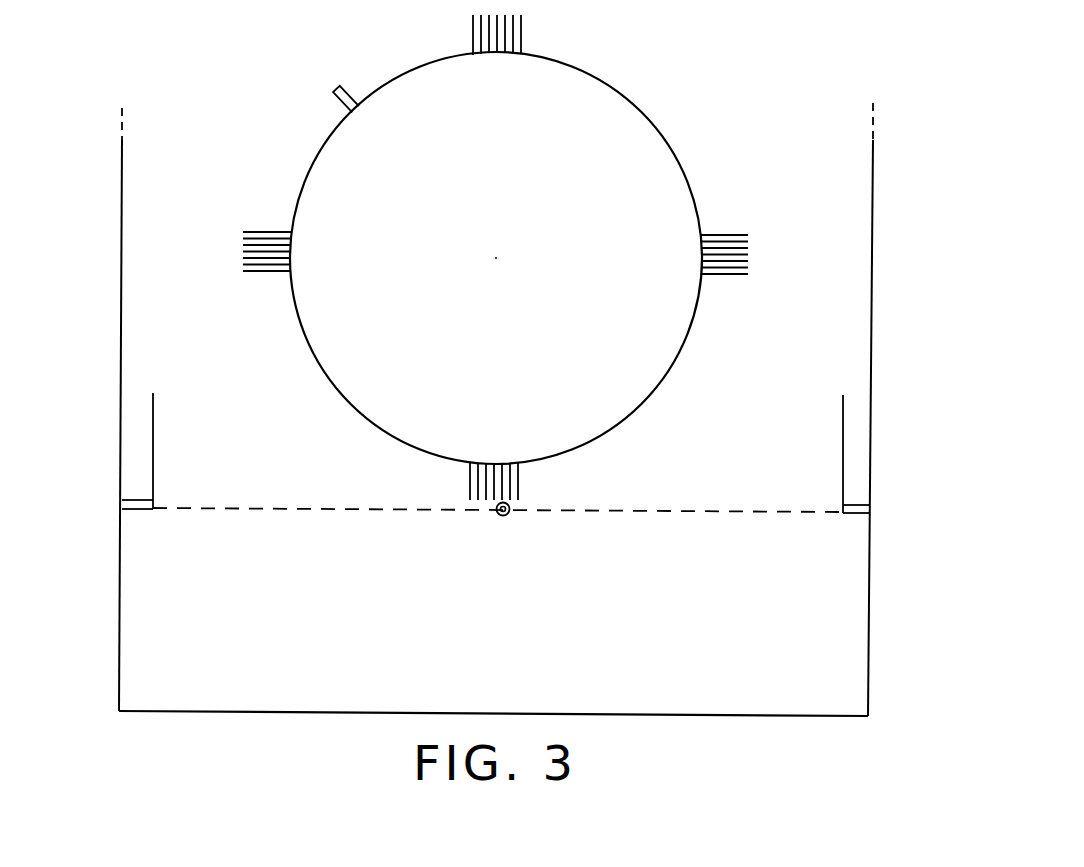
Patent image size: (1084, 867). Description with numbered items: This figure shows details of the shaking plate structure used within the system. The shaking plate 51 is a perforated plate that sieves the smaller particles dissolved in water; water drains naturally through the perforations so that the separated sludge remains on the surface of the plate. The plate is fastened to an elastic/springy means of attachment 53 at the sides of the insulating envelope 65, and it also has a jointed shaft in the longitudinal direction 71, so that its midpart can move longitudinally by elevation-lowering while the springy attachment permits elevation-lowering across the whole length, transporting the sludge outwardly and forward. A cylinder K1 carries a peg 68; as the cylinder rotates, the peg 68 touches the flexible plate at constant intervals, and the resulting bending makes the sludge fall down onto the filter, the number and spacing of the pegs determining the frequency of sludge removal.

The circular key/cam body K1 is at (652, 172).
The peg 68 is at (336, 86).
The insulating envelope 65 is at (122, 227).
The elastic/springy means of attachment 53 is at (122, 505).
The shaking plate 51 is at (602, 513).
The jointed shaft in the longitudinal direction 71 is at (503, 516).